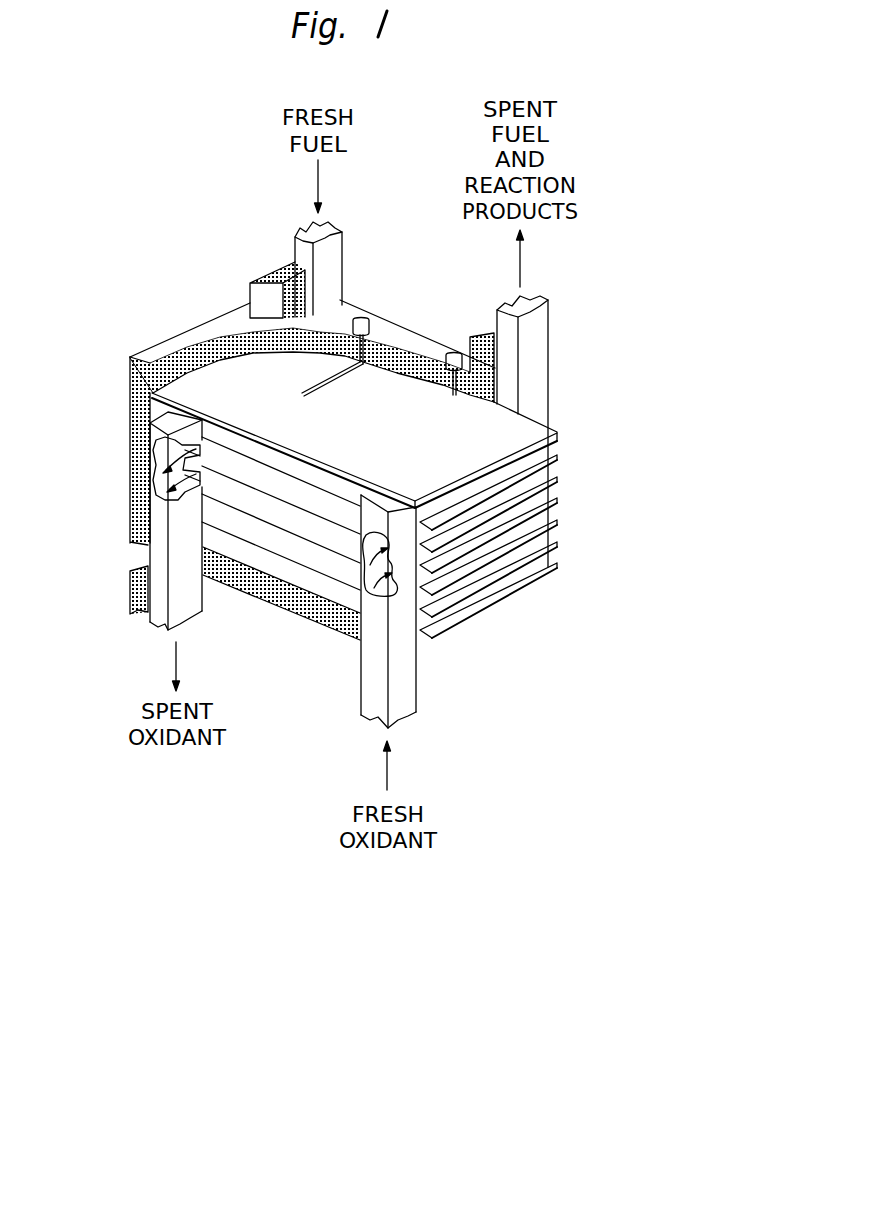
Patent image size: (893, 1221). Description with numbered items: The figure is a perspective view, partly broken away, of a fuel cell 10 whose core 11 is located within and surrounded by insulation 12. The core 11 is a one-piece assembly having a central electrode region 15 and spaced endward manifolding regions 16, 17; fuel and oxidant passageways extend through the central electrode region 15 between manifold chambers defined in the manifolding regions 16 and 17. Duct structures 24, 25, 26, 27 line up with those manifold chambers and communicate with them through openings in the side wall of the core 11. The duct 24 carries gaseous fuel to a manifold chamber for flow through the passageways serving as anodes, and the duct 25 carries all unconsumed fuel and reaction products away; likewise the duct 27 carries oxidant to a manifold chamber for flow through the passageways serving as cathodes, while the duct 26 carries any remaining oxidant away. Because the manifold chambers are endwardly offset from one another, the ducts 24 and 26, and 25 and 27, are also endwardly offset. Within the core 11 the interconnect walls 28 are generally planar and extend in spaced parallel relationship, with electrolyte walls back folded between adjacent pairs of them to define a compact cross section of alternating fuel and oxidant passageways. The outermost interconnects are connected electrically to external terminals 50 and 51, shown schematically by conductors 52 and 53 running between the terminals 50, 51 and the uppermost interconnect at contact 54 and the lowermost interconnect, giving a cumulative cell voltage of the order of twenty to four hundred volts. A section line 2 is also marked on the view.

The section line 2- 2 is at (60, 358).
The fuel cell 10 is at (93, 502).
The core 11 is at (279, 567).
The insulation 12 is at (130, 437).
The central electrode region 15 is at (288, 436).
The manifolding region 16 is at (236, 366).
The manifolding region 17 is at (499, 441).
The duct 24 is at (342, 250).
The duct 25 is at (550, 325).
The duct 26 is at (162, 620).
The duct 27 is at (418, 698).
The interconnect walls 28 is at (486, 613).
The external terminal 50 is at (370, 318).
The external terminal 51 is at (445, 352).
The conductor 52 is at (368, 367).
The conductor 53 is at (452, 392).
The contact 54 is at (318, 388).